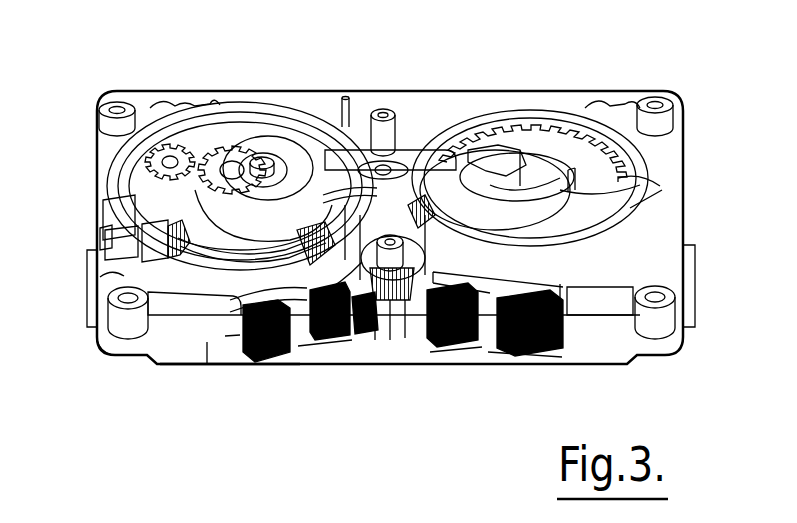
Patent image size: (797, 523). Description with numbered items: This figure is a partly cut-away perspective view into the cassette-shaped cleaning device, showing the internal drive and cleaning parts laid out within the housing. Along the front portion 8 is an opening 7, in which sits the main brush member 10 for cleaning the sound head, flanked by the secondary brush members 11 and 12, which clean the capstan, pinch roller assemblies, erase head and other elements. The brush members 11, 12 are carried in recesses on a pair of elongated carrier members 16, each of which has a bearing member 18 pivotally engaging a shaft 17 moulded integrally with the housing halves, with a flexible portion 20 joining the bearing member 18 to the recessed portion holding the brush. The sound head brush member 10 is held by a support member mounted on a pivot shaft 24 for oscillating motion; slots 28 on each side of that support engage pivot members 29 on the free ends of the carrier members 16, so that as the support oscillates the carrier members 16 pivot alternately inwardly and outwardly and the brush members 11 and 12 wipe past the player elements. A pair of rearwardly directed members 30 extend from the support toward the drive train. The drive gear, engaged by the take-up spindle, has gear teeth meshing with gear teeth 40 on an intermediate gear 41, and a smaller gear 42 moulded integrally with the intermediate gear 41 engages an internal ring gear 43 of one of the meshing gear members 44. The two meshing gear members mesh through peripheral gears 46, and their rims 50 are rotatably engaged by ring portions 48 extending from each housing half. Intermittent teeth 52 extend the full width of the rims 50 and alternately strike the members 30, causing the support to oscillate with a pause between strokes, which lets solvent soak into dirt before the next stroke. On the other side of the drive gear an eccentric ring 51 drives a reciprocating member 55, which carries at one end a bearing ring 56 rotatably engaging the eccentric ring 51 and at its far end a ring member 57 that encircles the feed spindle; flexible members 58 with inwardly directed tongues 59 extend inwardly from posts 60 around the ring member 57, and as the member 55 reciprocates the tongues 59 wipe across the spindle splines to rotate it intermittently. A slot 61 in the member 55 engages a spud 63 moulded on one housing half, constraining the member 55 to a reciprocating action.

The opening 7 is at (173, 352).
The front portion 8 is at (207, 365).
The brush member 10 is at (356, 338).
The brush member 11 is at (340, 340).
The brush member 12 is at (270, 348).
The carrier member 16 is at (225, 337).
The shaft 17 is at (97, 313).
The bearing member 18 is at (110, 352).
The flexible portion 20 is at (130, 357).
The pivot shaft 24 is at (387, 340).
The slot 28 is at (413, 340).
The pivot member 29 is at (403, 340).
The rearwardly directed member 30 is at (522, 246).
The gear teeth 40 is at (100, 227).
The intermediate gear 41 is at (163, 163).
The smaller gear 42 is at (193, 157).
The internal ring gear 43 is at (630, 178).
The meshing gear member 44 is at (147, 147).
The peripheral gear 46 is at (97, 210).
The ring portion 48 is at (100, 277).
The rim 50 is at (140, 150).
The eccentric ring 51 is at (263, 140).
The intermittent teeth 52 is at (100, 270).
The reciprocating member 55 is at (343, 170).
The pin 56 is at (310, 147).
The ring member 57 is at (522, 125).
The flexible member 58 is at (503, 122).
The tongue 59 is at (433, 212).
The post 60 is at (460, 173).
The slot 61 is at (403, 168).
The spud 63 is at (383, 160).